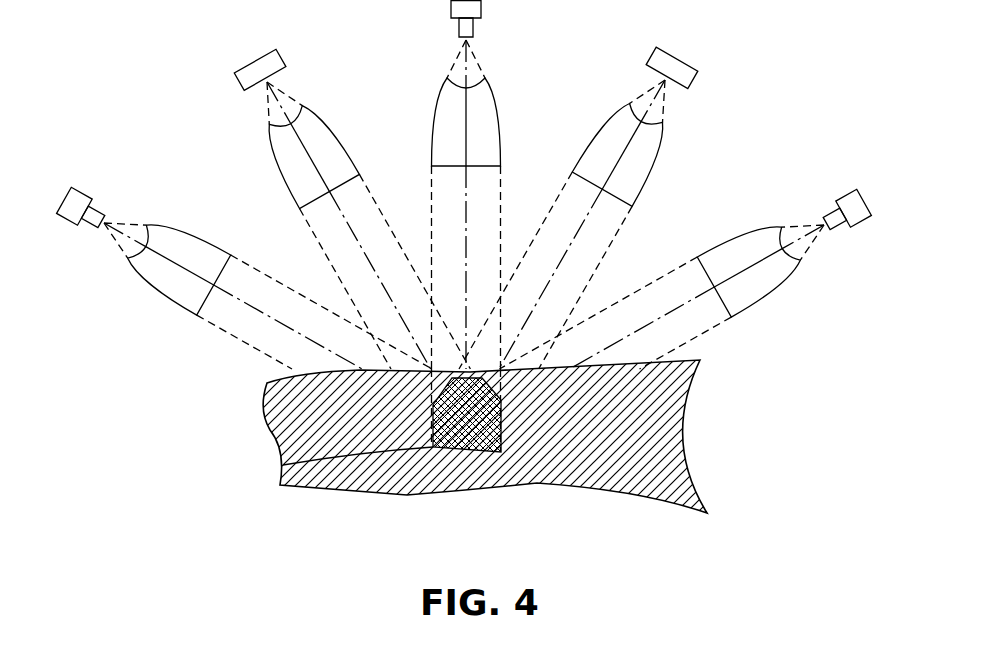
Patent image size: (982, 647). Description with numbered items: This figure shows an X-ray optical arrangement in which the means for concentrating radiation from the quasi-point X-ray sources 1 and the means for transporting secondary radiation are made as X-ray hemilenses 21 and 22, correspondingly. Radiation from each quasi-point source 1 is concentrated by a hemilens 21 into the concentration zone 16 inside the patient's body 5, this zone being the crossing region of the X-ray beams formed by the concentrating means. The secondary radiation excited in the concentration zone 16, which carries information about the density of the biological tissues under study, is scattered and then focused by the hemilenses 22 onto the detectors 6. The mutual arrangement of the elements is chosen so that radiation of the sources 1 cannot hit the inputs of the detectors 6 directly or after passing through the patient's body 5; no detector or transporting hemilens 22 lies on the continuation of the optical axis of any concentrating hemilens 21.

The quasi-point X-ray source 1 is at (72, 213).
The detector 6 is at (250, 72).
The X-ray hemilens for concentration of radiation 21 is at (173, 280).
The X-ray hemilens for transporting secondary radiation 22 is at (295, 153).
The patient's body 5 is at (273, 407).
The concentration zone 16 is at (280, 468).